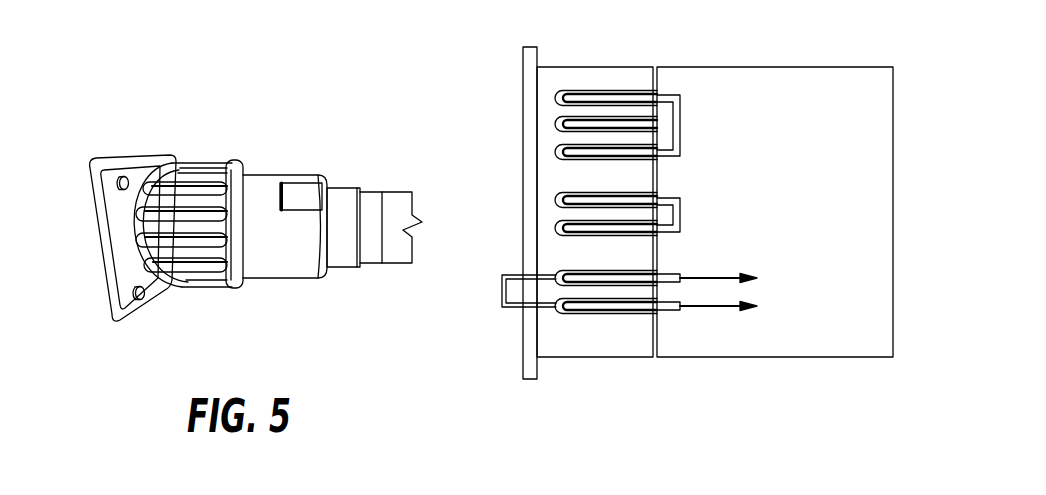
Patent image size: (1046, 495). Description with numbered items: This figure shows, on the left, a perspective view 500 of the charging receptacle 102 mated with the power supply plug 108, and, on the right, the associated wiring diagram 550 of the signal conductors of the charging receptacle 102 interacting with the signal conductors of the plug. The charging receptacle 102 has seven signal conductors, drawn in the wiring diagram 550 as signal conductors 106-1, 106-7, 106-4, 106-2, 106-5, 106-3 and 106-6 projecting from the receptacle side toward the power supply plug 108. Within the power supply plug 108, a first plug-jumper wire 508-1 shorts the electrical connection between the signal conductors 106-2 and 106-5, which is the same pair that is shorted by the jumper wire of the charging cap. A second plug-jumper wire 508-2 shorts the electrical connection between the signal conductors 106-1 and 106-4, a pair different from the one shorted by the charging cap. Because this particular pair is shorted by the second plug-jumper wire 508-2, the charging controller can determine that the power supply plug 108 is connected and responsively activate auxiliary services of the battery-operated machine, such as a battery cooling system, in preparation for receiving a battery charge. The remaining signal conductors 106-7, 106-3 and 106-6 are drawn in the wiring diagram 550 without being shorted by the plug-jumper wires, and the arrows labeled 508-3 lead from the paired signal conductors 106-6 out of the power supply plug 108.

The perspective view 500 is at (87, 187).
The charging receptacle 102 is at (208, 162).
The power supply plug 108 is at (284, 183).
The wiring diagram 550 is at (902, 70).
The signal conductor 106-1 is at (555, 98).
The signal conductor 106-7 is at (555, 124).
The signal conductor 106-4 is at (555, 152).
The signal conductor 106-2 is at (555, 200).
The signal conductor 106-5 is at (555, 228).
The signal conductor 106-3 is at (523, 251).
The signal conductor 106-6 is at (502, 291).
The first plug-jumper wire 508-1 is at (682, 215).
The second plug-jumper wire 508-2 is at (682, 125).
The signal output 508-3 is at (717, 277).